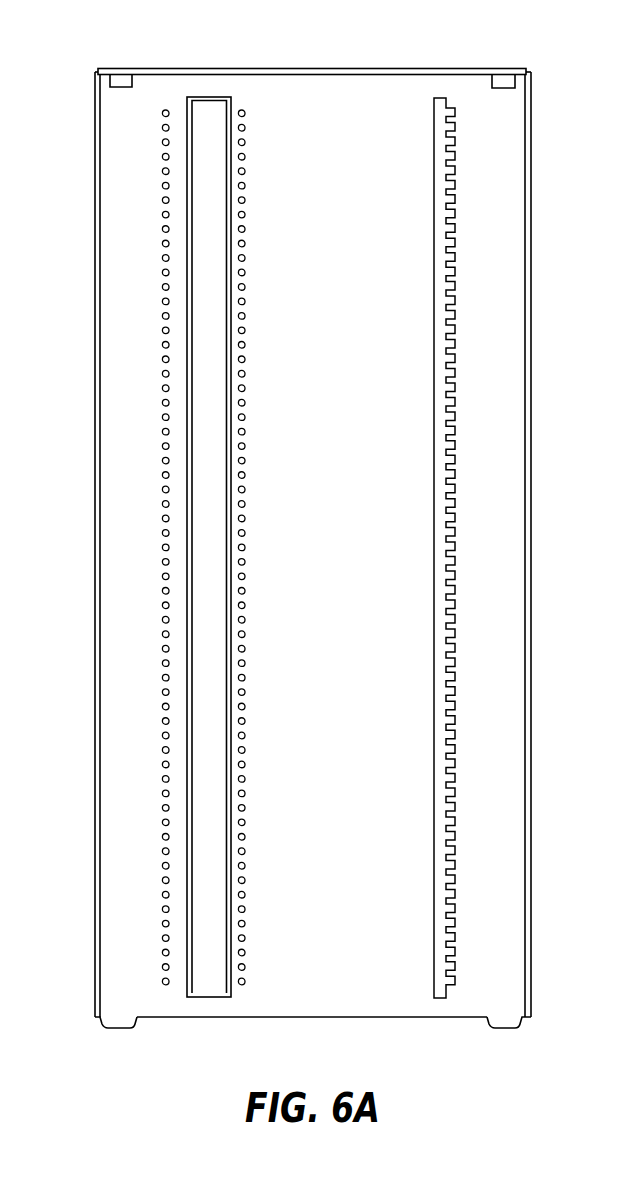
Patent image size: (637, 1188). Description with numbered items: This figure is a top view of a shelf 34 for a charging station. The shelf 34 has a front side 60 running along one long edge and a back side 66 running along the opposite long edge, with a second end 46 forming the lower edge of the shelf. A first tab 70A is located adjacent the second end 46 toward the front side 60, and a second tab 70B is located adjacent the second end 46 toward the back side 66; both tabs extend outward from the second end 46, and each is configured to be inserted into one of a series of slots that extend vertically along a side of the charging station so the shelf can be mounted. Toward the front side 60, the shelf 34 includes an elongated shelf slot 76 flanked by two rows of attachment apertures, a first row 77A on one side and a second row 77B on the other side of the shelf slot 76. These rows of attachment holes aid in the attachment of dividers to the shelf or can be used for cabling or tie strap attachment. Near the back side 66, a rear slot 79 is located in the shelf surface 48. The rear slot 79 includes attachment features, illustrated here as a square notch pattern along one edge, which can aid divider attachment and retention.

The shelf 34 is at (128, 36).
The second end 46 is at (312, 1017).
The shelf surface 48 is at (344, 537).
The front side 60 is at (95, 541).
The back side 66 is at (531, 543).
The first tab 70A is at (113, 1017).
The second tab 70B is at (498, 1017).
The shelf slot 76 is at (212, 317).
The first row of attachment apertures 77A is at (162, 765).
The second row of attachment apertures 77B is at (245, 779).
The rear slot 79 is at (447, 437).